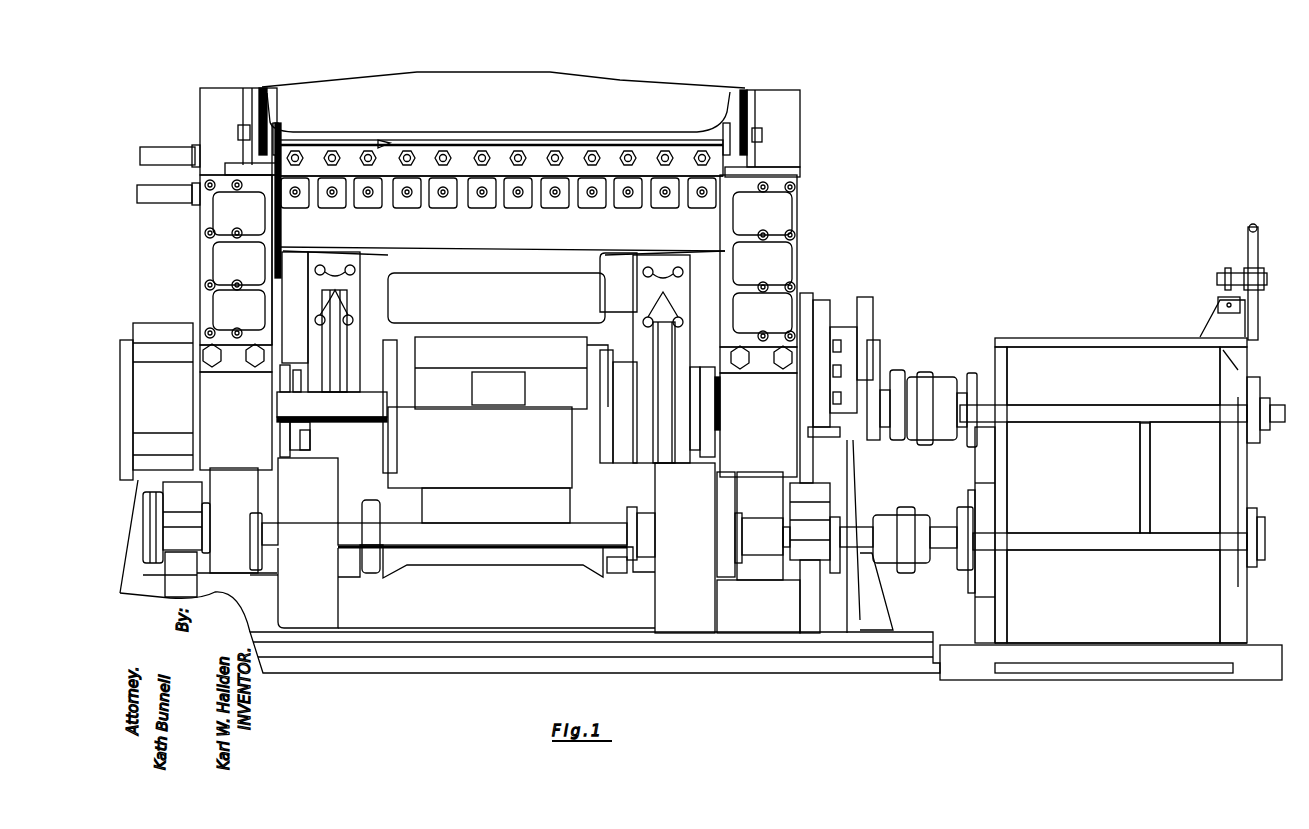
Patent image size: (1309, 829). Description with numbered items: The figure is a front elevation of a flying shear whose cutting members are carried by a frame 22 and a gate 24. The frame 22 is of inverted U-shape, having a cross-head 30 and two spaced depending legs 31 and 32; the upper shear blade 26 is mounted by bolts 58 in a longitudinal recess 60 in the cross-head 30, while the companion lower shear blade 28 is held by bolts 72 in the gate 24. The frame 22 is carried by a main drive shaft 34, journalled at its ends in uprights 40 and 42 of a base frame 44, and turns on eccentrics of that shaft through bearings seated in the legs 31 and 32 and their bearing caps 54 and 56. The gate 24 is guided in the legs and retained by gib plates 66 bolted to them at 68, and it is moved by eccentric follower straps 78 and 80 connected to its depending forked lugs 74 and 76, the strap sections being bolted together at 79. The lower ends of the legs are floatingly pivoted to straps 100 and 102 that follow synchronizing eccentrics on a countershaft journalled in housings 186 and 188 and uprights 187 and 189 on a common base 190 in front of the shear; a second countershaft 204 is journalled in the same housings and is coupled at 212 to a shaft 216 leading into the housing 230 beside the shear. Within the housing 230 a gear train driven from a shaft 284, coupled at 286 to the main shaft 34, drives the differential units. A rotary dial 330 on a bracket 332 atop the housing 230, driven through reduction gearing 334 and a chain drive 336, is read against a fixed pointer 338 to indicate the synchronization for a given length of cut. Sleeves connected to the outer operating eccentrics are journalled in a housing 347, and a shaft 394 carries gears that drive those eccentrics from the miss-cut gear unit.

The frame 22 is at (762, 88).
The gate 24 is at (504, 264).
The shear blade 26 is at (500, 137).
The shear blade 28 is at (501, 213).
The cross-head 30 is at (600, 114).
The leg 31 is at (805, 297).
The leg 32 is at (233, 273).
The main drive shaft 34 is at (885, 400).
The upright 40 is at (850, 330).
The upright 42 is at (160, 330).
The base frame 44 is at (863, 334).
The bearing cap 54 is at (733, 233).
The bearing cap 56 is at (236, 421).
The bolts 58 is at (480, 150).
The longitudinal recess 60 is at (385, 146).
The gib plates 66 is at (268, 238).
The bolts 68 is at (235, 188).
The bolts 72 is at (445, 195).
The forked lug 74 is at (618, 305).
The forked lug 76 is at (297, 303).
The eccentric follower strap 78 is at (666, 347).
The bolted joint 79 is at (347, 272).
The eccentric follower strap 80 is at (342, 354).
The strap 100 is at (755, 485).
The strap 102 is at (226, 480).
The housing 186 is at (661, 548).
The upright 187 is at (817, 490).
The housing 188 is at (329, 543).
The upright 189 is at (176, 539).
The common base 190 is at (540, 630).
The countershaft 204 is at (484, 528).
The coupling 212 is at (905, 515).
The shaft 216 is at (943, 532).
The housing 230 is at (1245, 492).
The shaft 284 is at (960, 400).
The coupling 286 is at (920, 380).
The rotary dial 330 is at (1258, 255).
The bracket 332 is at (1236, 270).
The reduction gearing 334 is at (1218, 300).
The chain drive 336 is at (1200, 328).
The fixed pointer 338 is at (1256, 226).
The housing 347 is at (440, 370).
The shaft 394 is at (332, 411).